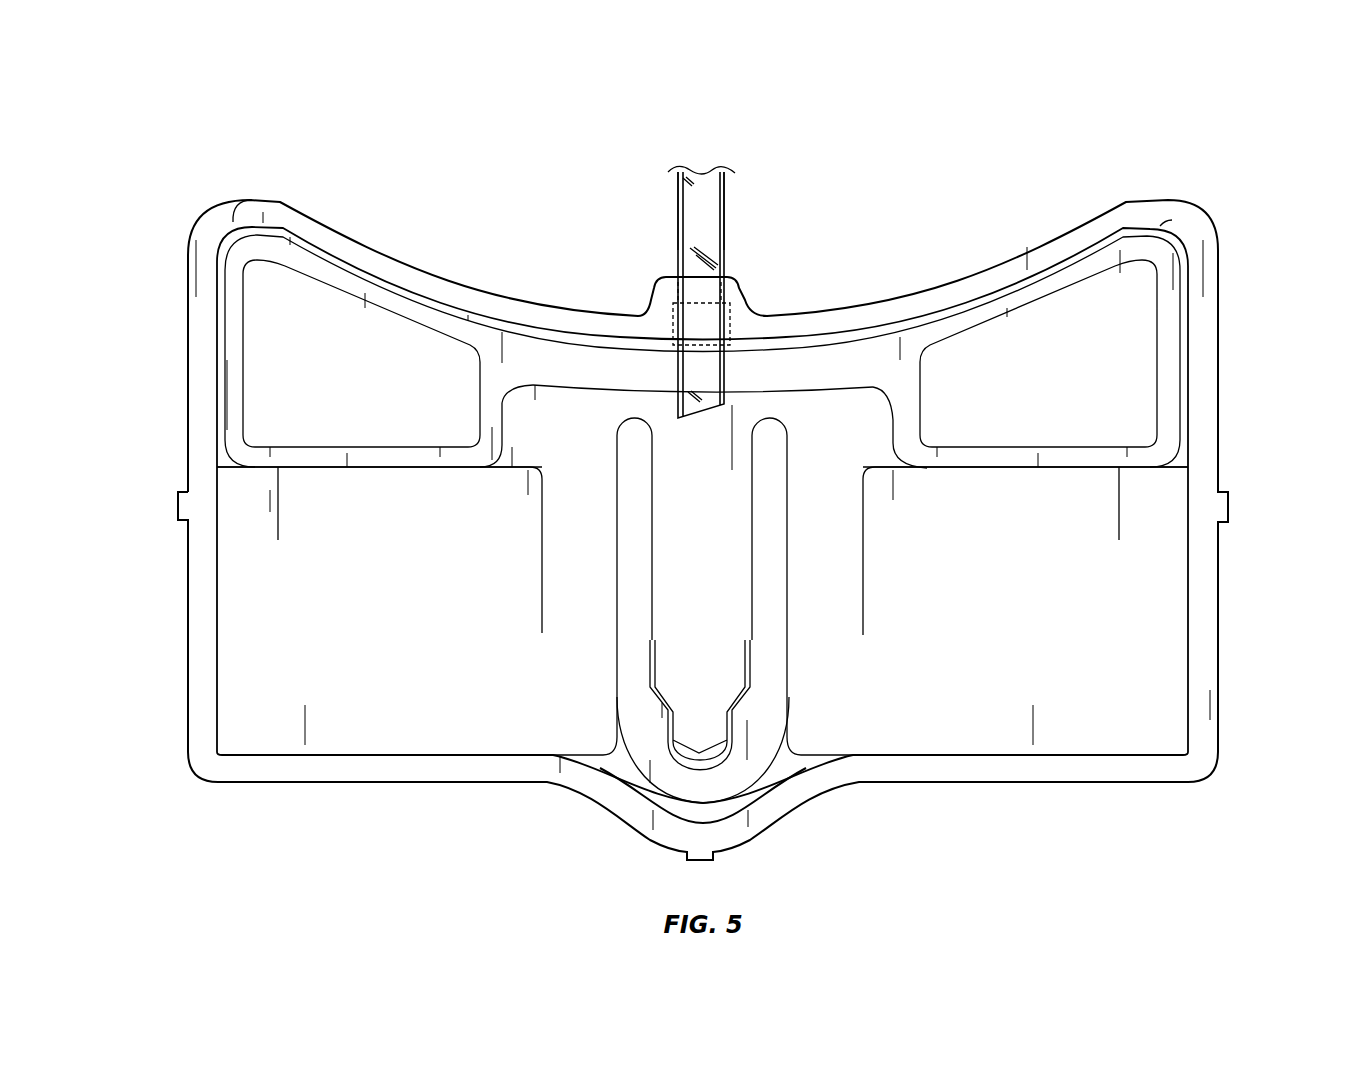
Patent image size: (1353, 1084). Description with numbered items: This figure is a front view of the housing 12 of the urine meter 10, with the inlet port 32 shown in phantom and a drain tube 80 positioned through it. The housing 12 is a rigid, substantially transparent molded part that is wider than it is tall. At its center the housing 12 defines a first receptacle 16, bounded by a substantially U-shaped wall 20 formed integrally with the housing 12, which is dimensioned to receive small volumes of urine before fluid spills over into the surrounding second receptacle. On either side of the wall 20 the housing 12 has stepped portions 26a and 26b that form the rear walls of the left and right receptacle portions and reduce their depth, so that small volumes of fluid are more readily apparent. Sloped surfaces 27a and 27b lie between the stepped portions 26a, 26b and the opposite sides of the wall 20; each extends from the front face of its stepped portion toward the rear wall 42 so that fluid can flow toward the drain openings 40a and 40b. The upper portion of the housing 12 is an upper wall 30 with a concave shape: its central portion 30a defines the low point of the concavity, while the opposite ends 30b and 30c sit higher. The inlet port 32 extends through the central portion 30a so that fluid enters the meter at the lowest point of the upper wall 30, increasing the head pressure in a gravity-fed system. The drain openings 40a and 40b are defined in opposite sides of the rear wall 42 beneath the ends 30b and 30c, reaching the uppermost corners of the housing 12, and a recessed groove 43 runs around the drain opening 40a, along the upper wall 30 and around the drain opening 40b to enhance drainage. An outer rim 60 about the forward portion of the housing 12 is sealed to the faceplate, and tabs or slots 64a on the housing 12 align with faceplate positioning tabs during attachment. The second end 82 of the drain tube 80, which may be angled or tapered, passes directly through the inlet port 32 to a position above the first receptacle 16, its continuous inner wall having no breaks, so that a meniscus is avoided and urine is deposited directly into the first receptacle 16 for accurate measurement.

The urine meter 10 is at (361, 82).
The housing 12 is at (1200, 222).
The first receptacle 16 is at (682, 592).
The U-shaped wall 20 is at (775, 609).
The stepped portion 26a is at (332, 468).
The stepped portion 26b is at (1040, 470).
The sloped surface 27a is at (580, 527).
The sloped surface 27b is at (820, 522).
The upper wall 30 is at (930, 320).
The central portion 30a is at (652, 335).
The end of upper wall 30b is at (233, 222).
The end of upper wall 30c is at (1160, 226).
The inlet port 32 is at (728, 325).
The drain opening 40a is at (322, 348).
The drain opening 40b is at (1037, 350).
The rear wall 42 is at (373, 455).
The recessed channel or groove 43 is at (537, 363).
The outer rim 60 is at (1200, 627).
The tabs or slots 64a is at (178, 503).
The drain tube 80 is at (722, 223).
The second end of drain tube 82 is at (687, 212).